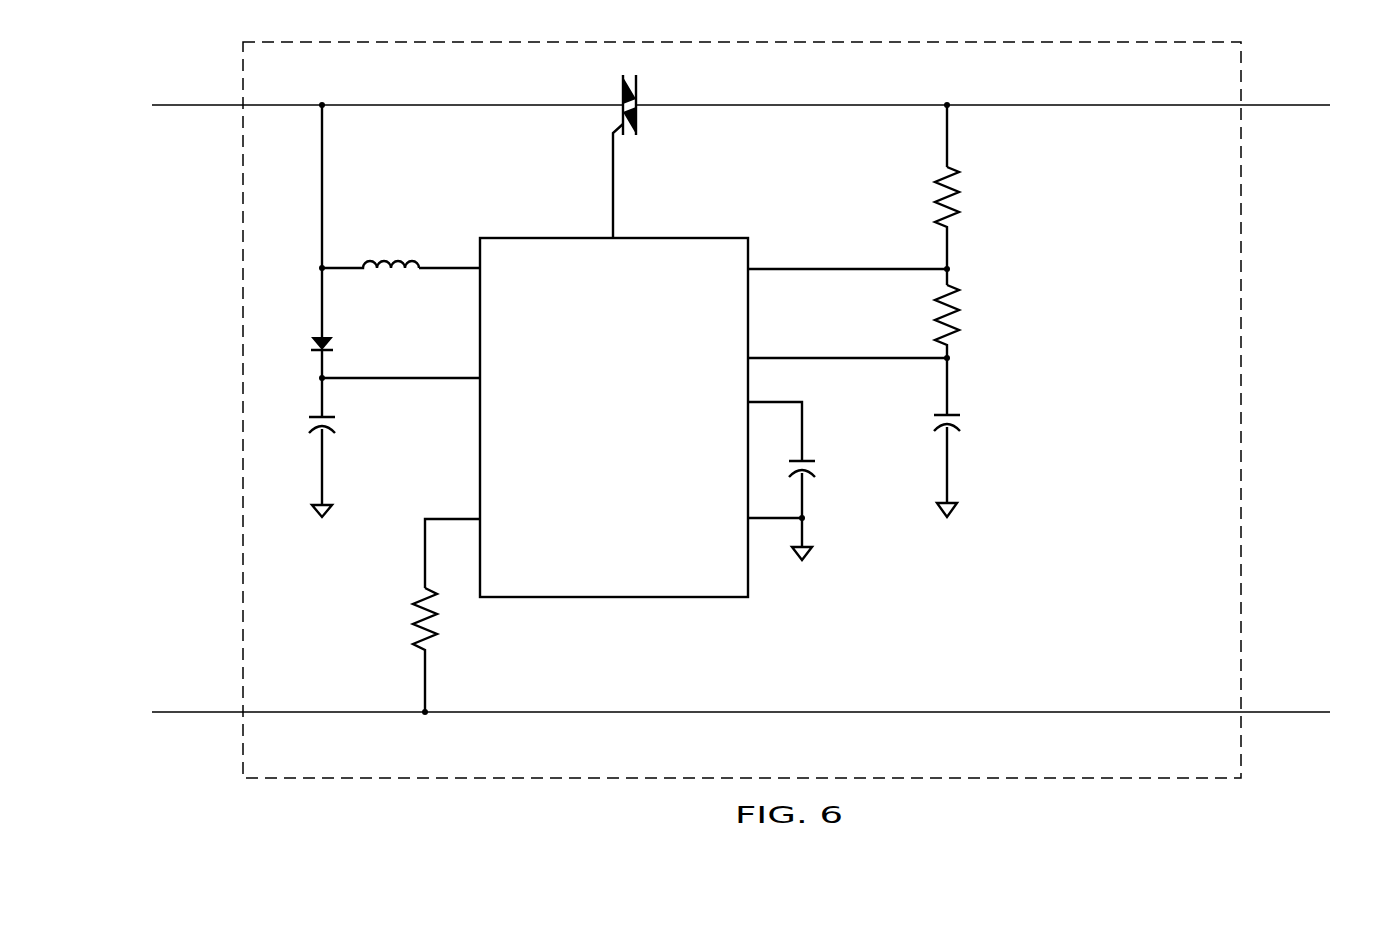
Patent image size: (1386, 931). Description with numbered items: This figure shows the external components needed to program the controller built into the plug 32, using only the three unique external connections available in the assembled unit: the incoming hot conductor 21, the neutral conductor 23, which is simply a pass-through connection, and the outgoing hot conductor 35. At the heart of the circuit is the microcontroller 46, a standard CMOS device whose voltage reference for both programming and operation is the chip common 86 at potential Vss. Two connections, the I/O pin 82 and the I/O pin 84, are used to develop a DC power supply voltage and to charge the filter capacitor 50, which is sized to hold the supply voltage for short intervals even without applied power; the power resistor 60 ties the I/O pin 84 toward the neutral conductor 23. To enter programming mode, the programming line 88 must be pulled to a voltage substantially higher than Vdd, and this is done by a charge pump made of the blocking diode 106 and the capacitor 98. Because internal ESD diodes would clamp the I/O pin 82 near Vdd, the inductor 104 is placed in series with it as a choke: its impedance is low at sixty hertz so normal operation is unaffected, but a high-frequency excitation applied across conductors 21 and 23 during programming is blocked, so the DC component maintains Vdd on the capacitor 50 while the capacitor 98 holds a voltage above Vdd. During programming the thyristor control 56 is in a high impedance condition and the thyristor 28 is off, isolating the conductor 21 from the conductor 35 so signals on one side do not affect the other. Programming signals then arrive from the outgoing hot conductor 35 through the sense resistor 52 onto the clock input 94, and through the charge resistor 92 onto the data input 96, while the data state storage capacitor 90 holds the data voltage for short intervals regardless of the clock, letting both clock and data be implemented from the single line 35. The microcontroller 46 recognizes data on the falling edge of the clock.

The incoming hot conductor 21 is at (210, 107).
The neutral conductor 23 is at (187, 714).
The thyristor 28 is at (637, 95).
The plug 32 is at (626, 778).
The outgoing hot conductor 35 is at (1275, 107).
The microcontroller 46 is at (636, 598).
The filter capacitor 50 is at (812, 466).
The sense resistor 52 is at (958, 198).
The thyristor control 56 is at (614, 205).
The power resistor 60 is at (413, 623).
The I/O pin 82 is at (445, 268).
The I/O pin 84 is at (434, 517).
The chip common 86 is at (322, 520).
The programming line 88 is at (444, 378).
The data state storage capacitor 90 is at (962, 428).
The charge resistor 92 is at (958, 330).
The clock input 94 is at (866, 268).
The data input 96 is at (882, 357).
The capacitor 98 is at (337, 420).
The inductor 104 is at (395, 260).
The blocking diode 106 is at (333, 344).